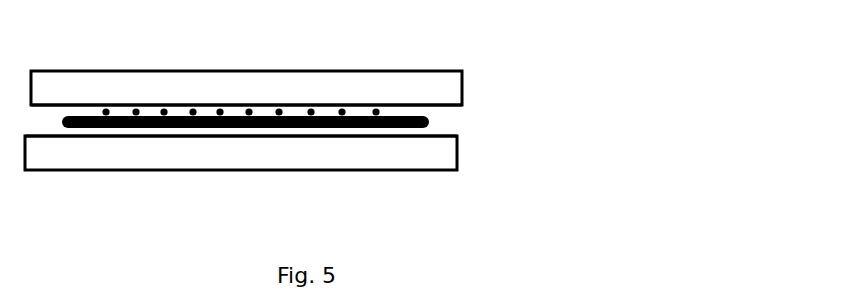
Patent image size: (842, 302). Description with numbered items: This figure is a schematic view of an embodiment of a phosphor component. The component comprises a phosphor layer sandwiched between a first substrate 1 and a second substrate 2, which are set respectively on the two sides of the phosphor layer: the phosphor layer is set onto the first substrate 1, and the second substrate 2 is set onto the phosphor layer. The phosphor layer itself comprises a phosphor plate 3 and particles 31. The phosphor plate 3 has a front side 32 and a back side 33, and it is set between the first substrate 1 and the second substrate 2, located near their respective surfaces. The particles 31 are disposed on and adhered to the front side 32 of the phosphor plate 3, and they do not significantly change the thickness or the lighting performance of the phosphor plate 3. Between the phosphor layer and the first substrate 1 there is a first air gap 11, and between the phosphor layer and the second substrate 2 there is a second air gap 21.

The first substrate 1 is at (432, 151).
The first air gap 11 is at (273, 132).
The second substrate 2 is at (427, 85).
The second air gap 21 is at (258, 110).
The phosphor plate 3 is at (430, 122).
The particles 31 is at (110, 111).
The front side 32 is at (352, 116).
The back side 33 is at (377, 127).